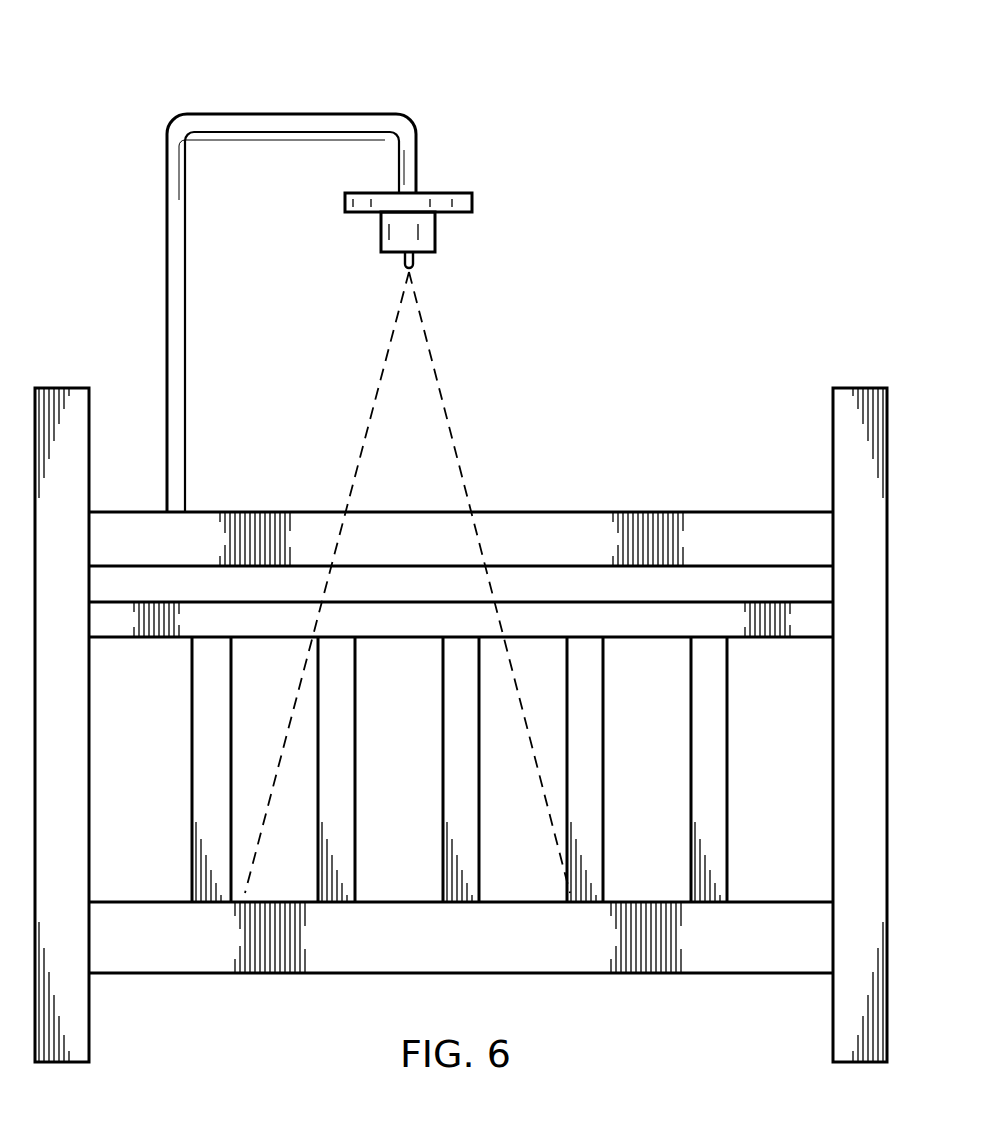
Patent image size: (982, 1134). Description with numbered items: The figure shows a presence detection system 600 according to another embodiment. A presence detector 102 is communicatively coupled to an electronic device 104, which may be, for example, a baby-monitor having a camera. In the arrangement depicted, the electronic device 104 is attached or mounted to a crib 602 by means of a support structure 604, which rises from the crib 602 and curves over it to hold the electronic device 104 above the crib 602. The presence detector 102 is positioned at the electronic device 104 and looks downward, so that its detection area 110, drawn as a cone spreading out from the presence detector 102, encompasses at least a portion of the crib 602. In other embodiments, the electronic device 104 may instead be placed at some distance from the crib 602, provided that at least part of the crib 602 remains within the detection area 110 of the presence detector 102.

The presence detection system 600 is at (647, 76).
The support structure 604 is at (167, 244).
The electronic device 104 is at (436, 231).
The presence detector 102 is at (418, 262).
The detection area 110 is at (374, 399).
The crib 602 is at (720, 975).